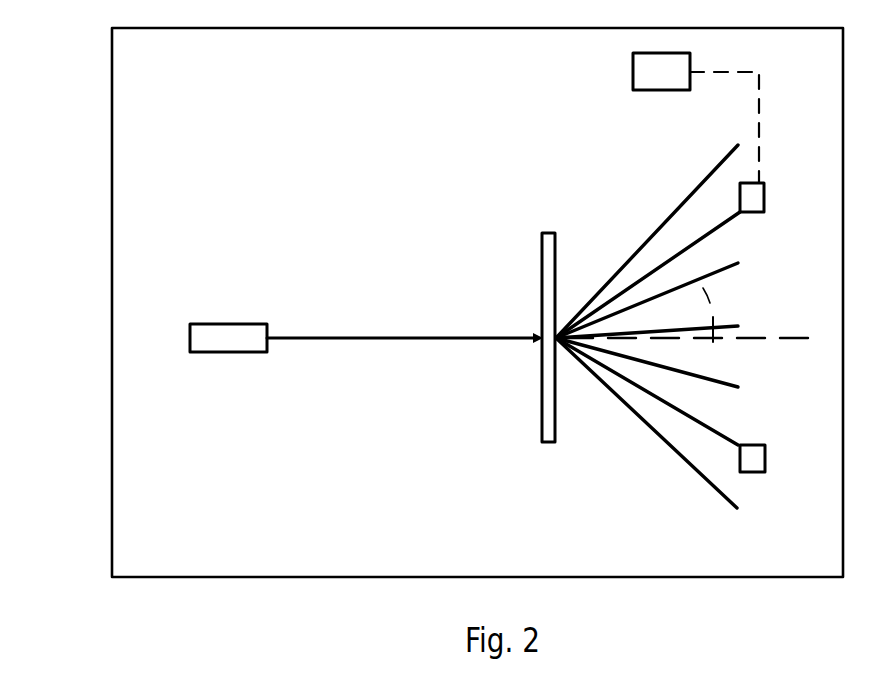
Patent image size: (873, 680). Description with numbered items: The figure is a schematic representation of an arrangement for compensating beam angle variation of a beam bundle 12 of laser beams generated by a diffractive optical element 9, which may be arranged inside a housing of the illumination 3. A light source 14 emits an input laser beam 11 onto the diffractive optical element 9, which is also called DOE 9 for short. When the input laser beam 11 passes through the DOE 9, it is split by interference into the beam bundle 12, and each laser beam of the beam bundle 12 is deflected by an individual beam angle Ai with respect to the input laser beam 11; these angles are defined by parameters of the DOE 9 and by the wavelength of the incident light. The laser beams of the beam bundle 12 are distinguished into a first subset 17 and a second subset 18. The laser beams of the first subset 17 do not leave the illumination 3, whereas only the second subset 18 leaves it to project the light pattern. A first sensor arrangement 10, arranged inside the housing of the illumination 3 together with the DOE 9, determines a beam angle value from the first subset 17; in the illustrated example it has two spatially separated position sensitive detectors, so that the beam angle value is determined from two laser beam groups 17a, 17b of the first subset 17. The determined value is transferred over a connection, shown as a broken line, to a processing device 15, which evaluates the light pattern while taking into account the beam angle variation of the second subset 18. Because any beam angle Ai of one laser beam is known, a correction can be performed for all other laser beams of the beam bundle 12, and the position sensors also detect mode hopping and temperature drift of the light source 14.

The illumination 3 is at (113, 130).
The diffractive optical element 9 is at (557, 232).
The first sensor arrangement 10 is at (768, 192).
The input laser beam 11 is at (479, 313).
The beam bundle 12 is at (608, 455).
The light source 14 is at (238, 324).
The processing device 15 is at (677, 84).
The first subset of the laser beams 17 is at (683, 325).
The first laser beam group 17a is at (697, 232).
The second laser beam group 17b is at (720, 428).
The second subset of the laser beams 18 is at (717, 163).
The beam angle Ai is at (685, 300).